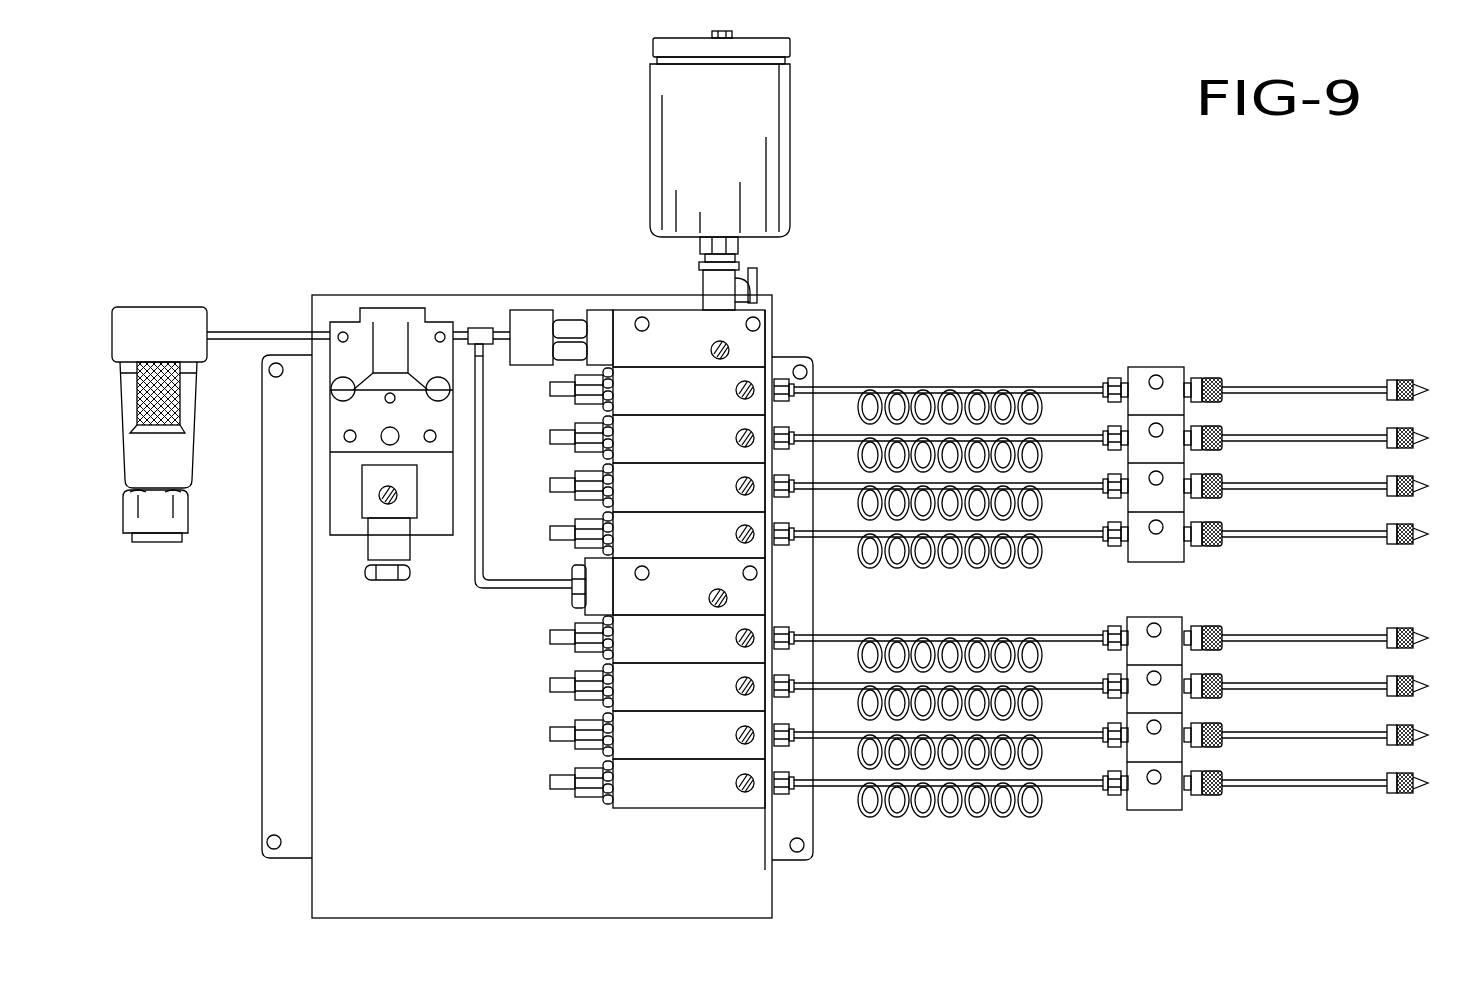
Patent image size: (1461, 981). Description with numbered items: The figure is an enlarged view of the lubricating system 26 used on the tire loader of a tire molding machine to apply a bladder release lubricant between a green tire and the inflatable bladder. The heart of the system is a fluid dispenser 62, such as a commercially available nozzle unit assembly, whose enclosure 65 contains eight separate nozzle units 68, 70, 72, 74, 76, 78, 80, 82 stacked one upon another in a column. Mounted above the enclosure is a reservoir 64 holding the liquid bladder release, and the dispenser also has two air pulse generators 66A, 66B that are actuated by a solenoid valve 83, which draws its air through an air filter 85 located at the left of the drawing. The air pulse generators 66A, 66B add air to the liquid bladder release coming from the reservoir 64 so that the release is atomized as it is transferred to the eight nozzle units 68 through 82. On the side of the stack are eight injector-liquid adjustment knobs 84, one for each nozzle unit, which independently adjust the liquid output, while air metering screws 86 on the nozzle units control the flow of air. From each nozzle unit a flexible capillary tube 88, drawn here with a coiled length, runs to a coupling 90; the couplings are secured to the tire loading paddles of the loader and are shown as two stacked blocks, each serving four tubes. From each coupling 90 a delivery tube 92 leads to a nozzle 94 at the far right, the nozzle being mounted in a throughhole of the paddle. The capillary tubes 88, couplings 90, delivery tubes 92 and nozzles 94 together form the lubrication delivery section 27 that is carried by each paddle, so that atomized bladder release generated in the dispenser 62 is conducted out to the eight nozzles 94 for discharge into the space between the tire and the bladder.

The lubricating system 26 is at (1125, 515).
The lubrication delivery section 27 is at (1183, 560).
The fluid dispenser 62 is at (707, 573).
The reservoir 64 is at (717, 114).
The enclosure 65 is at (332, 716).
The air pulse generator 66A is at (713, 325).
The air pulse generator 66B is at (740, 601).
The nozzle unit 68 is at (703, 405).
The nozzle unit 70 is at (703, 453).
The nozzle unit 72 is at (703, 501).
The nozzle unit 74 is at (703, 550).
The nozzle unit 76 is at (703, 653).
The nozzle unit 78 is at (703, 701).
The nozzle unit 80 is at (703, 749).
The nozzle unit 82 is at (703, 798).
The solenoid valve 83 is at (386, 345).
The injector-liquid adjustment knob 84 is at (590, 532).
The air filter 85 is at (162, 342).
The air metering screw 86 is at (750, 440).
The flexible capillary tube 88 is at (1068, 442).
The coupling 90 is at (1161, 372).
The delivery tube 92 is at (1312, 440).
The nozzle 94 is at (1423, 440).